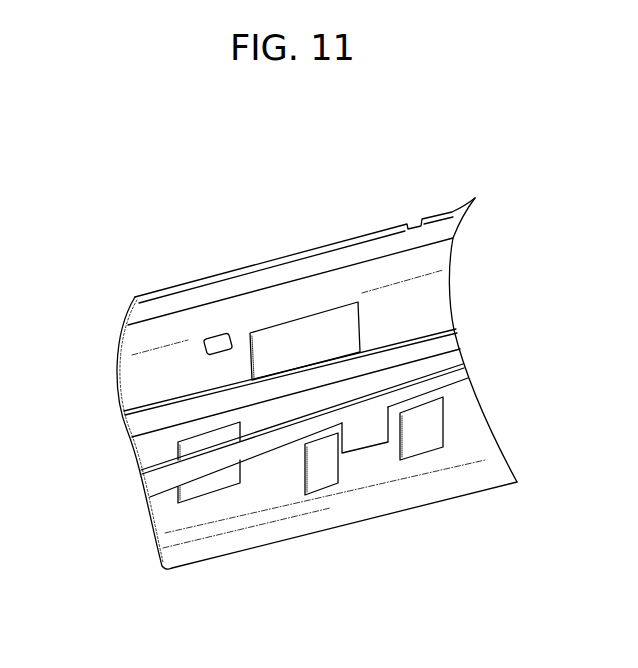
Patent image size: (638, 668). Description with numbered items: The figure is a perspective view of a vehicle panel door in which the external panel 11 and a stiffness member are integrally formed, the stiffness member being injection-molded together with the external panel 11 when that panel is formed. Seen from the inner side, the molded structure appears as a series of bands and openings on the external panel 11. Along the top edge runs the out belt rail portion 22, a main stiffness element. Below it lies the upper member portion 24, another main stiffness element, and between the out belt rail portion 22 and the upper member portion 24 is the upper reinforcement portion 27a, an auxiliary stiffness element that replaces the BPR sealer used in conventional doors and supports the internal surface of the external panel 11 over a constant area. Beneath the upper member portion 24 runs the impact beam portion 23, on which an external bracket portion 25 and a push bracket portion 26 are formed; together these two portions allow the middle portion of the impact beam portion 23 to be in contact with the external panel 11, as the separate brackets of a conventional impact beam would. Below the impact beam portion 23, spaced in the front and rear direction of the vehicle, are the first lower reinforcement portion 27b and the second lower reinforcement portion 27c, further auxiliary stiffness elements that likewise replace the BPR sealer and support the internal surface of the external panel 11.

The external panel 11 is at (157, 372).
The out belt rail portion 22 is at (243, 287).
The upper member portion 24 is at (458, 345).
The impact beam portion 23 is at (462, 372).
The external bracket portion 25 is at (363, 438).
The push bracket portion 26 is at (208, 484).
The upper reinforcement portion 27a is at (300, 338).
The first lower reinforcement portion 27b is at (432, 427).
The second lower reinforcement portion 27c is at (322, 468).